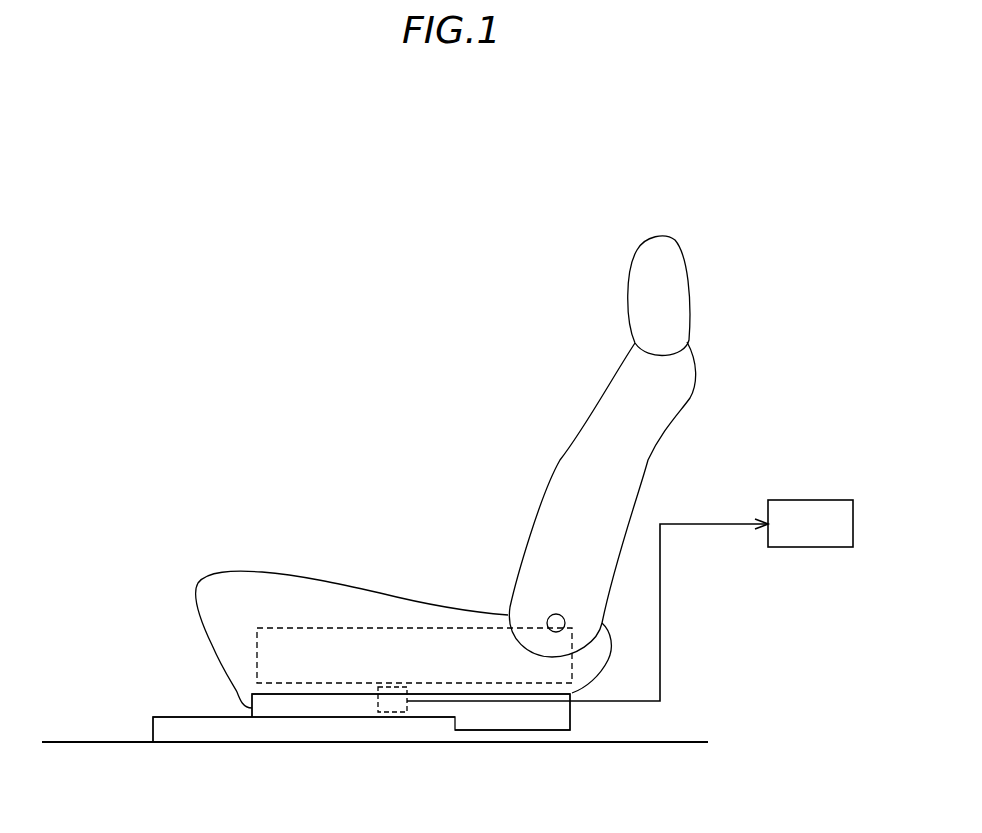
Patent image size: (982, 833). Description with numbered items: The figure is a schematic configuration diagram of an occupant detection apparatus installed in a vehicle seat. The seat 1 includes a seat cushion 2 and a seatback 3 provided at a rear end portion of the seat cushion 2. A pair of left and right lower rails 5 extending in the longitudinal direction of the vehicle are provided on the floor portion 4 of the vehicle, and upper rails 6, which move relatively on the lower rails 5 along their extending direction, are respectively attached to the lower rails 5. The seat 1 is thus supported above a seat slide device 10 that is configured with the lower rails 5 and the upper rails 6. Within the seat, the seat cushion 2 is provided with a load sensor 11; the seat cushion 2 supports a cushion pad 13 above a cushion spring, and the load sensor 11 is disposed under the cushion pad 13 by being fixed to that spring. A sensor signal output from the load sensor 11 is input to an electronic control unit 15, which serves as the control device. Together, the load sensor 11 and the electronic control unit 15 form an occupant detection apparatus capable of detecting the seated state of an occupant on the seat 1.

The seat 1 is at (311, 296).
The seat cushion 2 is at (250, 570).
The seatback 3 is at (578, 422).
The floor portion 4 is at (103, 742).
The lower rails 5 is at (165, 717).
The upper rails 6 is at (222, 708).
The seat slide device 10 is at (186, 654).
The load sensor 11 is at (393, 712).
The cushion pad 13 is at (277, 626).
The electronic control unit (ECU) 15 is at (812, 500).